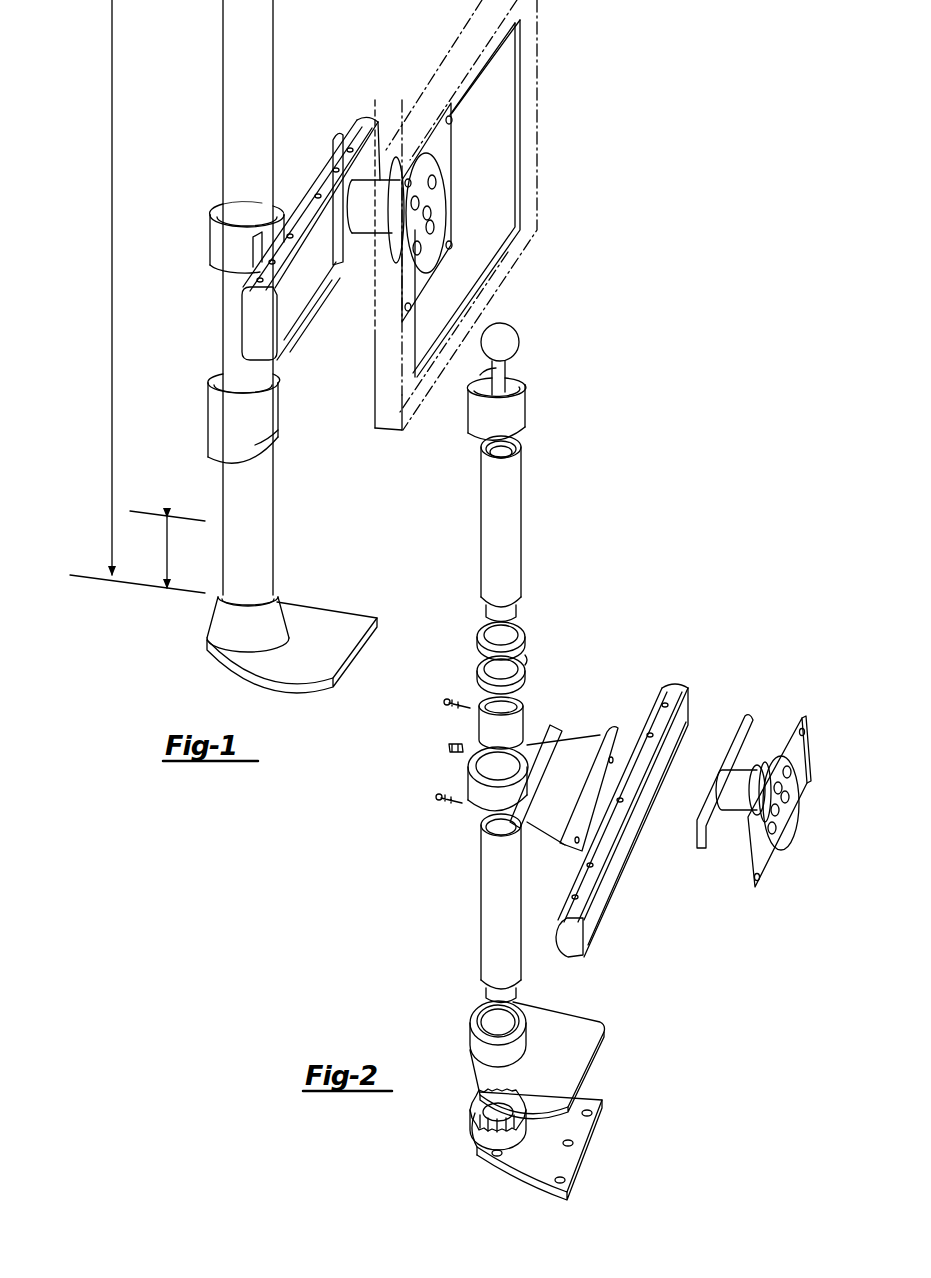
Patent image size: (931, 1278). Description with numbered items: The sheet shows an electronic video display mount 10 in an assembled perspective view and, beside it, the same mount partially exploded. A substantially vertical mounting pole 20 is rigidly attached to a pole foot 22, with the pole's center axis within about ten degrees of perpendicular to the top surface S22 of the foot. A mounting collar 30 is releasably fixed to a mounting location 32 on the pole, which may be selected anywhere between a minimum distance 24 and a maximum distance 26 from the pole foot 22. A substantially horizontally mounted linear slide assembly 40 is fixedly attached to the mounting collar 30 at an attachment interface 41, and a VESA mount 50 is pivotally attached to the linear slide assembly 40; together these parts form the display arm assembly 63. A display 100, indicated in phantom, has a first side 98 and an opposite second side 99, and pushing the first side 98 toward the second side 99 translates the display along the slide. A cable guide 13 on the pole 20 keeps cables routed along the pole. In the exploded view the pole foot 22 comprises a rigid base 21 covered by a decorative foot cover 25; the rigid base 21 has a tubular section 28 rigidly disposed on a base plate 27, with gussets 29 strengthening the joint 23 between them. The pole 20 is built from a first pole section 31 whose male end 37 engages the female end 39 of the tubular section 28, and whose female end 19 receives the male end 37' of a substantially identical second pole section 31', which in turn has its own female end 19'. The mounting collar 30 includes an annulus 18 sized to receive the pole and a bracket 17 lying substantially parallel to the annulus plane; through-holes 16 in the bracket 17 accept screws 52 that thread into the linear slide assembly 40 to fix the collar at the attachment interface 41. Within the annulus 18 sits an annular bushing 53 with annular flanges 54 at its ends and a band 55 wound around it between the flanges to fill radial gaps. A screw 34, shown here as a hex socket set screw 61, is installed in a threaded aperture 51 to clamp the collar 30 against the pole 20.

In FIG. 1, the electronic video display mount 10 is at (66, 60).
In FIG. 1, the substantially vertical mounting pole 20 is at (220, 60).
In FIG. 2, the substantially vertical mounting pole 20 is at (458, 693).
In FIG. 1, the linear slide assembly 40 is at (365, 118).
In FIG. 2, the linear slide assembly 40 is at (676, 690).
In FIG. 1, the attachment interface 41 is at (294, 172).
In FIG. 2, the attachment interface 41 is at (622, 752).
In FIG. 1, the mounting location 32 is at (226, 203).
In FIG. 1, the mounting collar 30 is at (205, 222).
In FIG. 2, the mounting collar 30 is at (487, 797).
In FIG. 1, the maximum distance 26 is at (112, 270).
In FIG. 1, the cable guide 13 is at (253, 421).
In FIG. 2, the cable guide 13 is at (518, 410).
In FIG. 1, the minimum distance 24 is at (172, 556).
In FIG. 1, the pole foot 22 is at (342, 610).
In FIG. 1, the top surface of the pole foot S22 is at (288, 658).
In FIG. 1, the display arm assembly 63 is at (432, 52).
In FIG. 1, the first side of the display 98 is at (540, 47).
In FIG. 1, the VESA mount 50 is at (462, 178).
In FIG. 2, the VESA mount 50 is at (754, 801).
In FIG. 1, the display 100 is at (506, 280).
In FIG. 1, the second side of the display 99 is at (378, 328).
In FIG. 2, the female end of the second pole section 19' is at (467, 442).
In FIG. 2, the second pole section 31' is at (470, 527).
In FIG. 2, the male end of the second pole section 37' is at (538, 603).
In FIG. 2, the annular flanges 54 is at (523, 647).
In FIG. 2, the annular bushing 53 is at (527, 663).
In FIG. 2, the band 55 is at (525, 712).
In FIG. 2, the screws 52 is at (455, 705).
In FIG. 2, the hex socket set screw 61 is at (455, 745).
In FIG. 2, the screw 34 is at (449, 748).
In FIG. 2, the through-holes 16 is at (573, 747).
In FIG. 2, the annulus 18 is at (482, 762).
In FIG. 2, the bracket 17 is at (533, 750).
In FIG. 2, the female end of the first pole section 19 is at (463, 812).
In FIG. 2, the threaded aperture 51 is at (490, 762).
In FIG. 2, the first pole section 31 is at (467, 907).
In FIG. 2, the male end of the first pole section 37 is at (470, 984).
In FIG. 2, the foot cover 25 is at (580, 1032).
In FIG. 2, the female end/aspect of the tubular section 39 is at (482, 1092).
In FIG. 2, the joint 23 is at (470, 1134).
In FIG. 2, the tubular section 28 is at (478, 1143).
In FIG. 2, the gussets 29 is at (508, 1135).
In FIG. 2, the base plate 27 is at (566, 1155).
In FIG. 2, the rigid base 21 is at (547, 1185).